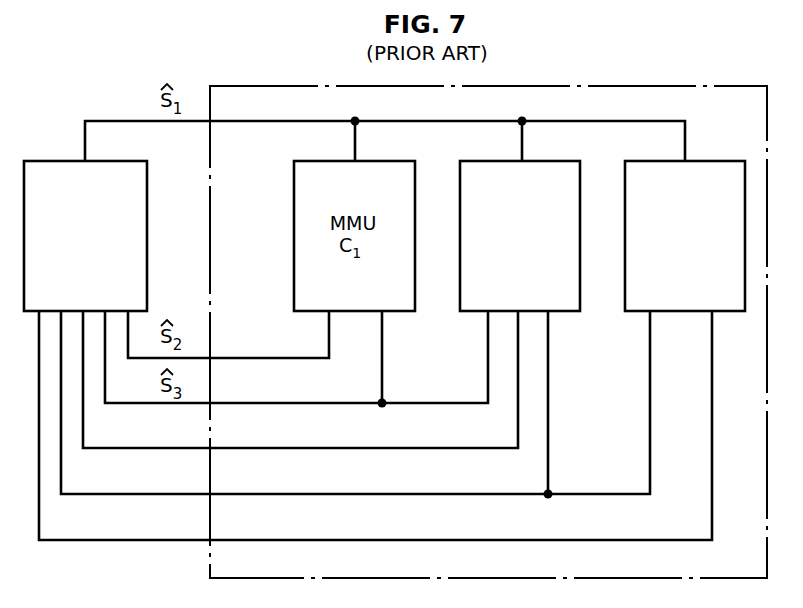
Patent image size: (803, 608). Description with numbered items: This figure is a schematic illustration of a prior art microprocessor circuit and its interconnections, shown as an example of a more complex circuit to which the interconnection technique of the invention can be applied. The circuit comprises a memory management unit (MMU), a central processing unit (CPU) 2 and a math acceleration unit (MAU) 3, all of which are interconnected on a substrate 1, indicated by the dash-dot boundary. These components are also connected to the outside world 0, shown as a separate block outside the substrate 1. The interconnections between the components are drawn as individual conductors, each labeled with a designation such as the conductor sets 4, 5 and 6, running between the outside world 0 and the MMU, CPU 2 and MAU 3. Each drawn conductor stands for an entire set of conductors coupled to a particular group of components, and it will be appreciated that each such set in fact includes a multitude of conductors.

The outside world 0 is at (85, 236).
The substrate 1 is at (231, 84).
The central processing unit (CPU) 2 is at (520, 236).
The math acceleration unit (MAU) 3 is at (685, 236).
The set of conductors 4 is at (173, 419).
The set of conductors 5 is at (173, 465).
The set of conductors 6 is at (173, 510).